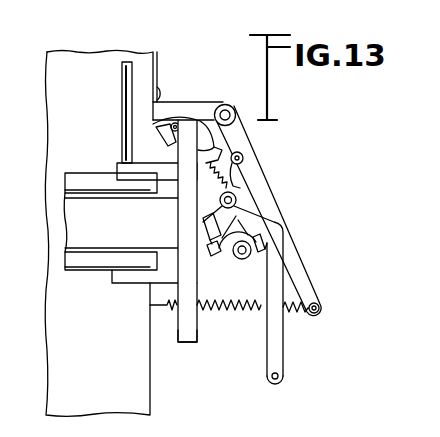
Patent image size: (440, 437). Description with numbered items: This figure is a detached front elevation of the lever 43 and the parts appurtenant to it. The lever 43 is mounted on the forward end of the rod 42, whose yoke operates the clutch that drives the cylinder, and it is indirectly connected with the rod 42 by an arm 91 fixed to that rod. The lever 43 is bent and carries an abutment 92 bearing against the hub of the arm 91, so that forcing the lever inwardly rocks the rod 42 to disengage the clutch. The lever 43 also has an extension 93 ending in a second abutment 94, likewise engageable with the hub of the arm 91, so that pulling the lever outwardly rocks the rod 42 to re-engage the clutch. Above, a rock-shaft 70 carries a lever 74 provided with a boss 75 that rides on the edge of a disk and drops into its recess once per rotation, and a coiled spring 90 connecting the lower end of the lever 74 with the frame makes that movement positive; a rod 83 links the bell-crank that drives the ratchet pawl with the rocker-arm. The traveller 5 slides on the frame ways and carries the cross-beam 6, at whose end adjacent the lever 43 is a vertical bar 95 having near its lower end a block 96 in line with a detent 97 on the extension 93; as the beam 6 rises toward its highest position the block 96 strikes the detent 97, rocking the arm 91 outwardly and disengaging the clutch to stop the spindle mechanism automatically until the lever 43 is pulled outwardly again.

The traveller 5 is at (57, 123).
The cross-beam 6 is at (70, 185).
The rod 42 is at (240, 259).
The lever 43 is at (275, 278).
The rock-shaft 70 is at (224, 104).
The lever 74 is at (262, 183).
The boss 75 is at (241, 163).
The rod 83 is at (125, 87).
The coiled spring 90 is at (223, 310).
The arm 91 is at (235, 227).
The abutment 92 is at (250, 243).
The extension 93 is at (208, 243).
The abutment 94 is at (213, 257).
The vertical bar 95 is at (190, 212).
The block 96 is at (202, 333).
The detent 97 is at (207, 223).